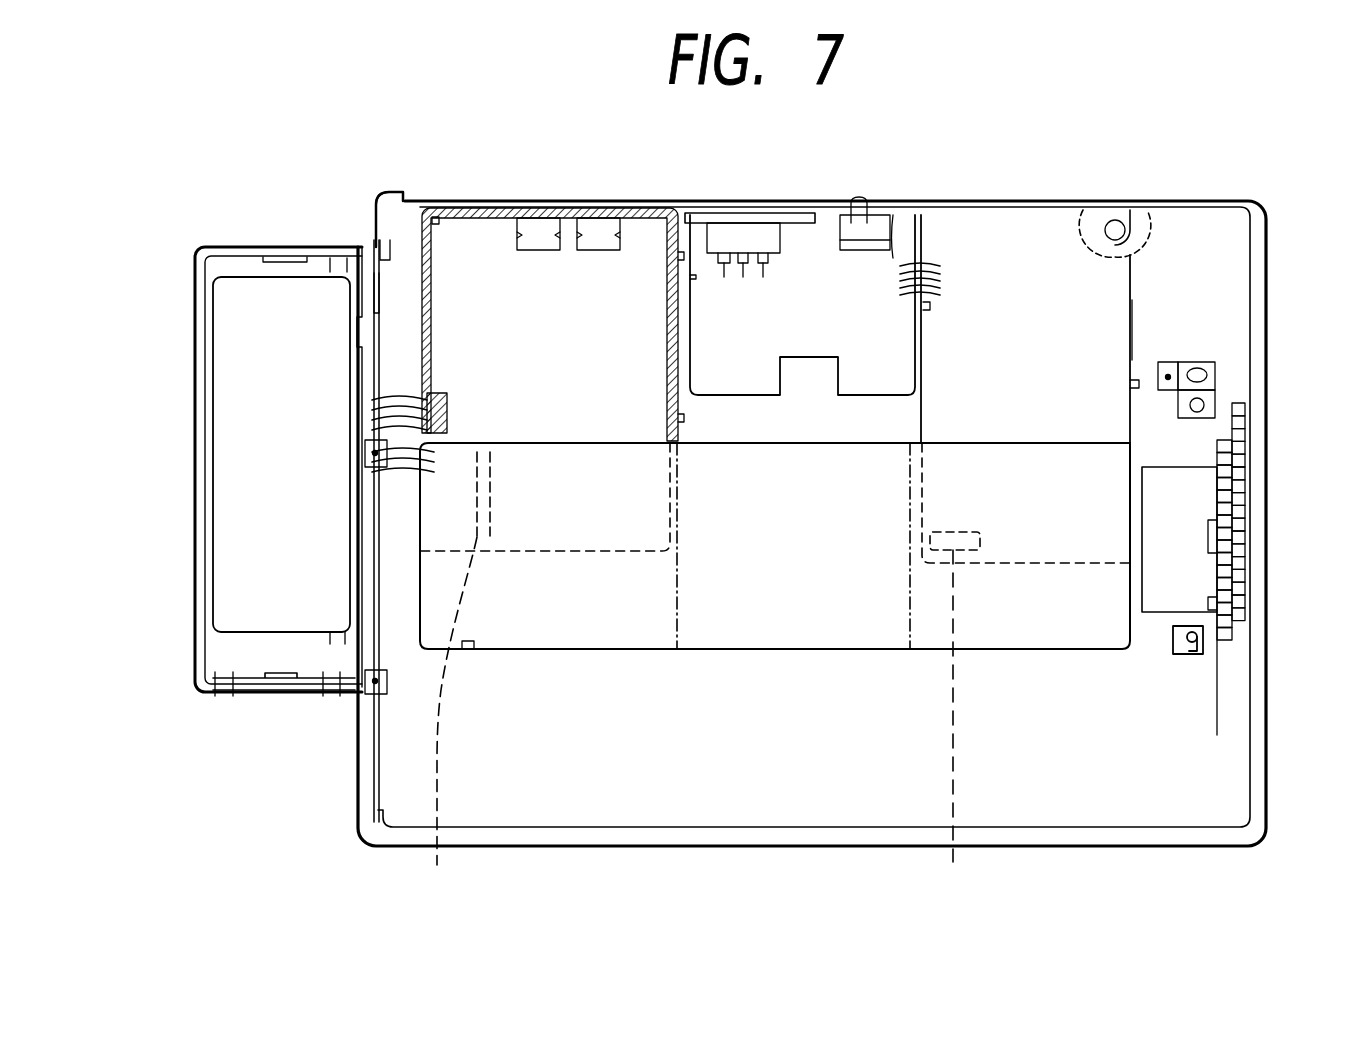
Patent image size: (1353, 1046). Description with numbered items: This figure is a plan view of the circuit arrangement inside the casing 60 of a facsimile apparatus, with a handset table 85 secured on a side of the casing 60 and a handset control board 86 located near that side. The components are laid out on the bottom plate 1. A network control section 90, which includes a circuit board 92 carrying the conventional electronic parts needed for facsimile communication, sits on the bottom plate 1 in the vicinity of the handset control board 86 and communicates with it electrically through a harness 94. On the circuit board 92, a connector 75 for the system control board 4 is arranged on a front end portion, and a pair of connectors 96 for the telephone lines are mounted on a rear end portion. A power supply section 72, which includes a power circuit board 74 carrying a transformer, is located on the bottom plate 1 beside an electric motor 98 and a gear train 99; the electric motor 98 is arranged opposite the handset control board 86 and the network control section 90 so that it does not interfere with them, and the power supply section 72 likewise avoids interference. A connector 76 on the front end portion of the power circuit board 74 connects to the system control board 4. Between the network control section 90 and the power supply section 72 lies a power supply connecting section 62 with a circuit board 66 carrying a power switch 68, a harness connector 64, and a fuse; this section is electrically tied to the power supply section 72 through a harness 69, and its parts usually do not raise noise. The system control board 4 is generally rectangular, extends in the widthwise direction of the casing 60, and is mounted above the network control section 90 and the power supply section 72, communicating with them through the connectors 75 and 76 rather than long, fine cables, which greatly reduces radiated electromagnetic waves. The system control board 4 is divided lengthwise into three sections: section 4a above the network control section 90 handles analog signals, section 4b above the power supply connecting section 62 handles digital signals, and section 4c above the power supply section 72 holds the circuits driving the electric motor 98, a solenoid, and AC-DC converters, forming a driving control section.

The bottom plate 1 is at (1228, 772).
The casing 60 is at (1268, 672).
The handset table 85 is at (192, 490).
The handset control board 86 is at (235, 617).
The network control section 90 is at (390, 232).
The circuit board 92 is at (467, 232).
The connectors 96 is at (538, 244).
The harness connector 64 is at (740, 214).
The power supply connecting section 62 is at (826, 182).
The power switch 68 is at (875, 230).
The circuit board 66 is at (893, 258).
The harness 69 is at (940, 262).
The power circuit board 74 is at (1107, 280).
The power supply section 72 is at (1133, 330).
The system control board 4 is at (628, 648).
The section 4a is at (558, 640).
The section 4b is at (778, 638).
The section 4c is at (1086, 643).
The connector 75 is at (445, 677).
The connector 76 is at (965, 720).
The harness 94 is at (404, 396).
The electric motor 98 is at (1192, 487).
The gear train 99 is at (1225, 515).